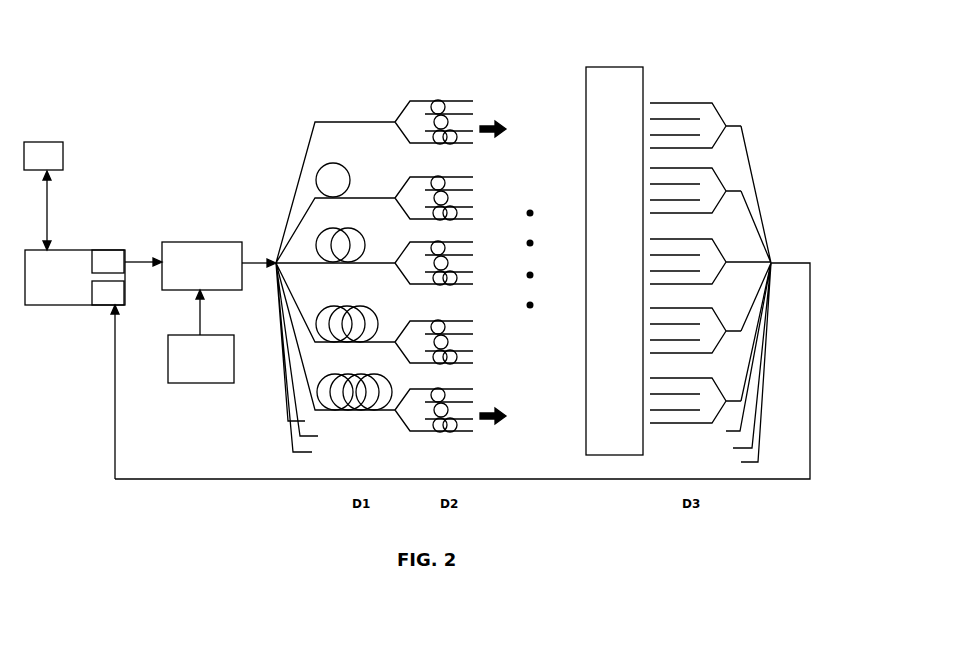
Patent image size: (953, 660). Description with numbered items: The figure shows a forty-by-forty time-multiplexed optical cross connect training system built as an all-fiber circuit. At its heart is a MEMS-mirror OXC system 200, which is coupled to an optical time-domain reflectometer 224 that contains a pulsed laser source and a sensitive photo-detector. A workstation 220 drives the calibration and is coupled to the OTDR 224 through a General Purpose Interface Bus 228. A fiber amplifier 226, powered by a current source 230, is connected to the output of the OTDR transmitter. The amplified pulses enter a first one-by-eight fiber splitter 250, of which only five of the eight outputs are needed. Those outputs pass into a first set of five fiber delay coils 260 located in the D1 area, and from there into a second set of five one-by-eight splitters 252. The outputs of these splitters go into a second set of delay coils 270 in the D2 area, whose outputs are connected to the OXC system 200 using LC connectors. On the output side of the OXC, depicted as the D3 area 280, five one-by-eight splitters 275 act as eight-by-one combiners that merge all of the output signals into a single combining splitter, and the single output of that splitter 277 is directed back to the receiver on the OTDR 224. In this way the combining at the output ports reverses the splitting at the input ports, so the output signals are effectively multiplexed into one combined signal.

The OXC system 200 is at (647, 70).
The workstation 220 is at (58, 143).
The optical time-domain reflectometer 224 is at (40, 307).
The fiber amplifier 226 is at (173, 291).
The General Purpose Interface Bus 228 is at (50, 206).
The current source 230 is at (185, 384).
The first 1×8 fiber splitter 250 is at (293, 184).
The second set of 1×8 splitters 252 is at (428, 435).
The first set of fiber delay coils 260 is at (333, 412).
The second set of delay coils 270 is at (452, 438).
The 1×8 splitters 275 is at (728, 111).
The splitter output 277 is at (792, 262).
The D3 area 280 is at (660, 448).